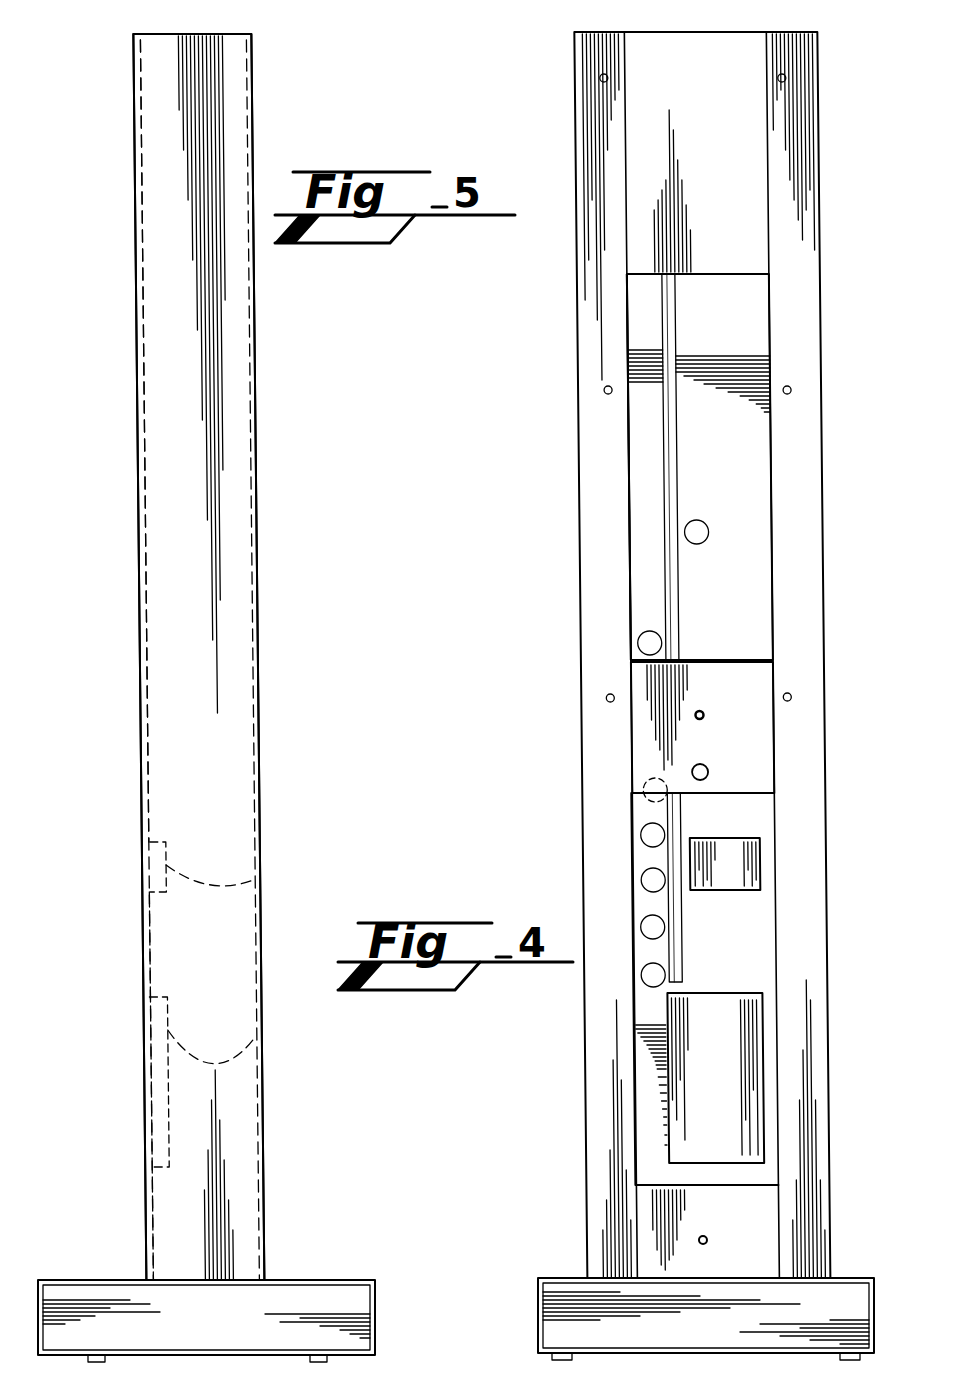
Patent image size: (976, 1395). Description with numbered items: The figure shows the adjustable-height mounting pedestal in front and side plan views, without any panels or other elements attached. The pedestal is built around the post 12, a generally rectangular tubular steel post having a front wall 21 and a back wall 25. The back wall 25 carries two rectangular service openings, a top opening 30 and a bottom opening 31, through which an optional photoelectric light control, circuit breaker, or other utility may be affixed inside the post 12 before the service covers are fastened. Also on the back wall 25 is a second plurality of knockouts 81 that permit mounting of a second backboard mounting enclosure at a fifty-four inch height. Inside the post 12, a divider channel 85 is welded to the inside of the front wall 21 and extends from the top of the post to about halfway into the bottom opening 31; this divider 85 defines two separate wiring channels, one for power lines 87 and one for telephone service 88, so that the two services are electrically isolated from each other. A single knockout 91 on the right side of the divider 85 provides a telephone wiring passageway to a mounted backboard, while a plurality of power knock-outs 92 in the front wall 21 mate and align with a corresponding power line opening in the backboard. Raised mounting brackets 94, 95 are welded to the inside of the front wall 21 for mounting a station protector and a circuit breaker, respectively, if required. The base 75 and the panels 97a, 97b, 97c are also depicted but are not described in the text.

In FIG. 5, the post 12 is at (163, 222).
In FIG. 4, the post 12 is at (576, 100).
In FIG. 5, the front wall 21 is at (143, 648).
In FIG. 4, the front wall 21 is at (748, 537).
In FIG. 5, the back wall 25 is at (256, 732).
In FIG. 4, the back wall 25 is at (587, 520).
In FIG. 5, the top opening 30 is at (192, 476).
In FIG. 4, the top opening 30 is at (752, 604).
In FIG. 5, the bottom opening 31 is at (232, 950).
In FIG. 4, the bottom opening 31 is at (755, 940).
In FIG. 5, the base 75 is at (70, 1280).
In FIG. 4, the base 75 is at (850, 1278).
In FIG. 4, the knockouts 81 is at (600, 77).
In FIG. 4, the divider channel 85 is at (666, 432).
In FIG. 4, the wiring channel for power lines 87 is at (646, 333).
In FIG. 4, the wiring channel for telephone service 88 is at (732, 346).
In FIG. 4, the knockout 91 is at (700, 520).
In FIG. 4, the power knock-outs 92 is at (640, 837).
In FIG. 5, the mounting bracket 94 is at (263, 878).
In FIG. 4, the mounting bracket 94 is at (760, 838).
In FIG. 5, the mounting bracket 95 is at (258, 1033).
In FIG. 4, the mounting bracket 95 is at (752, 1000).
In FIG. 4, the upper cover panel 97a is at (644, 232).
In FIG. 4, the middle cover panel 97b is at (766, 746).
In FIG. 4, the lower cover panel 97c is at (645, 1230).